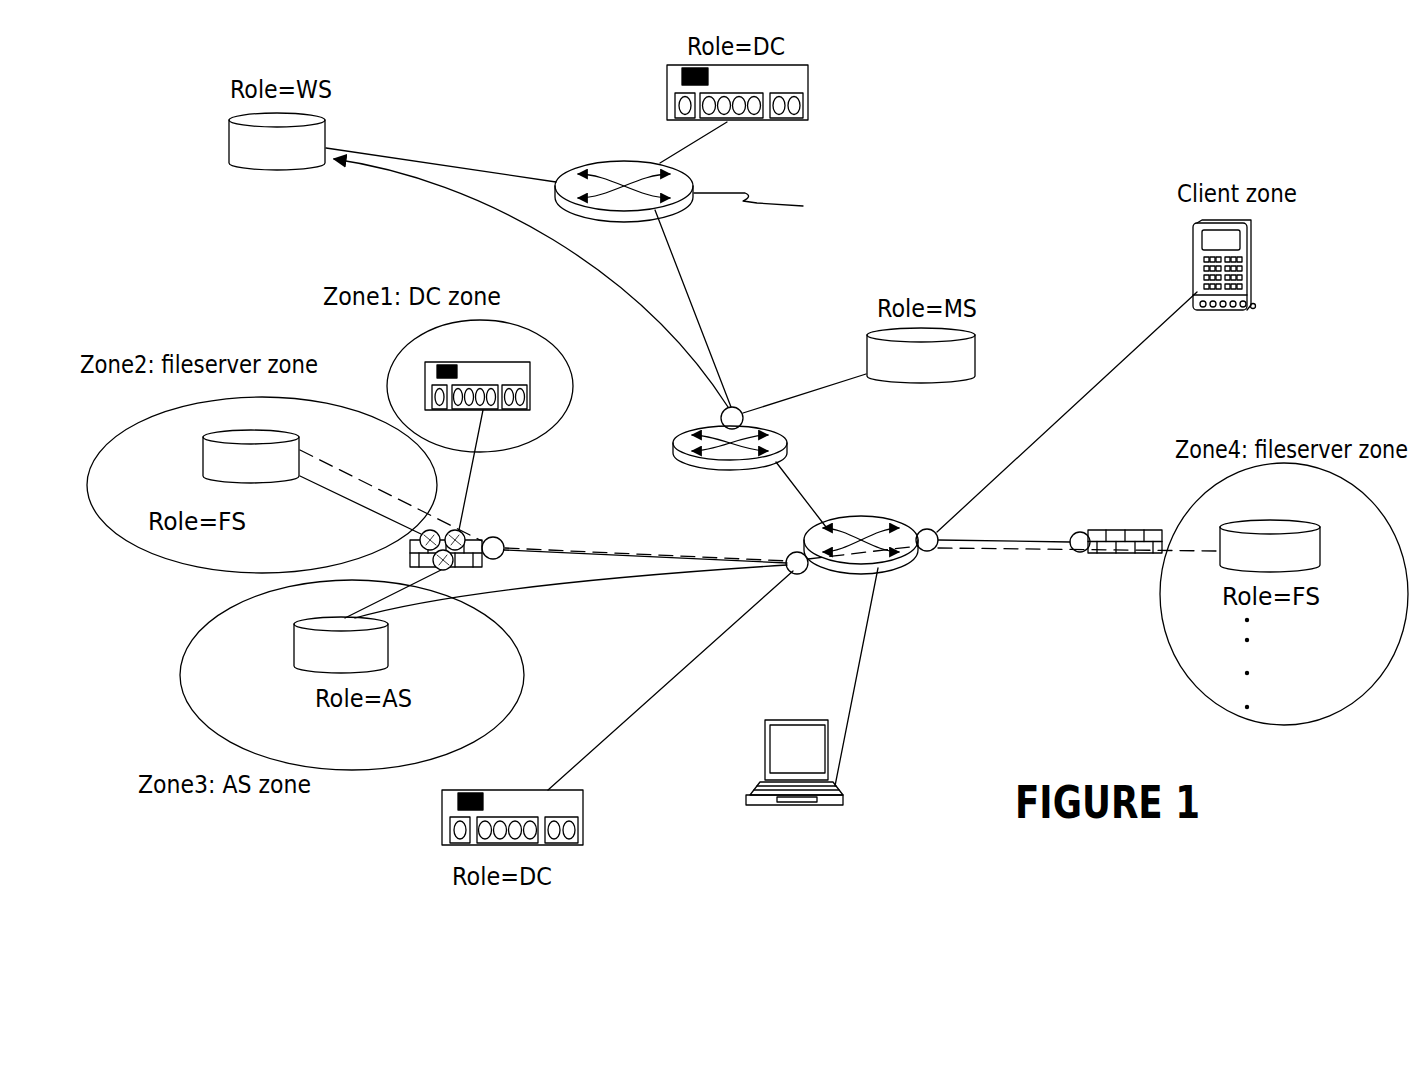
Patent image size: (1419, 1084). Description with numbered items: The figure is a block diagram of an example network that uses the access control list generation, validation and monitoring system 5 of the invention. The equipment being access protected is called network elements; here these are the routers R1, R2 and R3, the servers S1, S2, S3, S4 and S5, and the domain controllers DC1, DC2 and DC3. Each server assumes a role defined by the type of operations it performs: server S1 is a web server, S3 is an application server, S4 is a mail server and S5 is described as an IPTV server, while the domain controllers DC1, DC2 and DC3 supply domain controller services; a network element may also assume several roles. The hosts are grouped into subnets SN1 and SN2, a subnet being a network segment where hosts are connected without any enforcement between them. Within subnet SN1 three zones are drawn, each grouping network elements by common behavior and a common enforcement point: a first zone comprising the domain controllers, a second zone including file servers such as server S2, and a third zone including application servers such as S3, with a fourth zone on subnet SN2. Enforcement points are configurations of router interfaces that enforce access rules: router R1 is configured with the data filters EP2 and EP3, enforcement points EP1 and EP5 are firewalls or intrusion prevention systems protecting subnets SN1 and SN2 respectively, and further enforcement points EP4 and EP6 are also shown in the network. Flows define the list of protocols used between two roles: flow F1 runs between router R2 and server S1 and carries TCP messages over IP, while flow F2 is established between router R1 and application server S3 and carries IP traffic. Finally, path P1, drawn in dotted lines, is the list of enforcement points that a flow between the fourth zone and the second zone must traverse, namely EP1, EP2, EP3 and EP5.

The ACL generation, validation and monitoring system 5 is at (762, 753).
The router R1 is at (861, 530).
The router R2 is at (726, 435).
The router R3 is at (624, 176).
The enforcement point EP1 is at (481, 536).
The enforcement point EP2 is at (792, 551).
The enforcement point EP3 is at (928, 528).
The enforcement point EP4 is at (777, 205).
The enforcement point EP5 is at (1122, 557).
The enforcement point EP6 is at (735, 406).
The web server S1 is at (294, 166).
The server S2 is at (276, 482).
The application server S3 is at (366, 668).
The mail server S4 is at (936, 374).
The IPTV server S5 is at (1291, 567).
The domain controller DC1 is at (512, 817).
The domain controller DC2 is at (737, 92).
The domain controller DC3 is at (477, 386).
The subnet SN1 is at (490, 358).
The subnet SN2 is at (1383, 652).
The path P1 is at (697, 555).
The flow F1 is at (433, 185).
The flow F2 is at (577, 610).